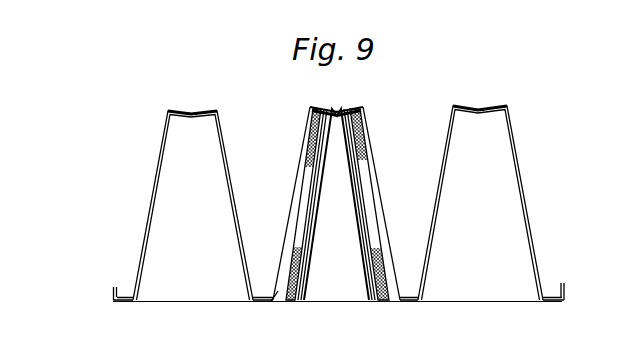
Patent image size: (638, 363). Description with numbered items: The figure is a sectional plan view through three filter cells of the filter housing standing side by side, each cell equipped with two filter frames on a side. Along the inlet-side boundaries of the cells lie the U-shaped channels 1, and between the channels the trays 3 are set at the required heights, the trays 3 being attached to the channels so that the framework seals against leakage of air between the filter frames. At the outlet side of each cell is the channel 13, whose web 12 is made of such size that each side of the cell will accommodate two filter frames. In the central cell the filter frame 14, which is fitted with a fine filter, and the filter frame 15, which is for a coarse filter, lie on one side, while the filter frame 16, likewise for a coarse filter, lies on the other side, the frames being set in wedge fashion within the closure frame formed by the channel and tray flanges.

The U-shaped channel 1 is at (123, 292).
The tray 3 is at (338, 203).
The web 12 is at (170, 110).
The channel 13 is at (202, 115).
The filter frame 14 is at (286, 299).
The filter frame 15 is at (299, 300).
The filter frame 16 is at (360, 207).